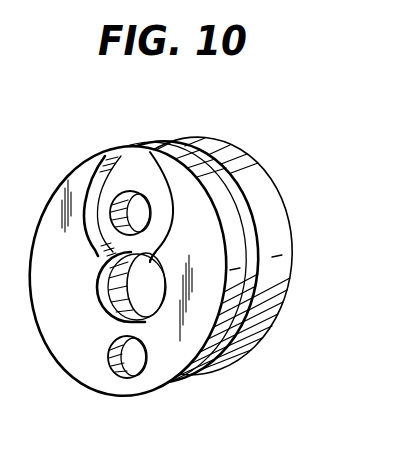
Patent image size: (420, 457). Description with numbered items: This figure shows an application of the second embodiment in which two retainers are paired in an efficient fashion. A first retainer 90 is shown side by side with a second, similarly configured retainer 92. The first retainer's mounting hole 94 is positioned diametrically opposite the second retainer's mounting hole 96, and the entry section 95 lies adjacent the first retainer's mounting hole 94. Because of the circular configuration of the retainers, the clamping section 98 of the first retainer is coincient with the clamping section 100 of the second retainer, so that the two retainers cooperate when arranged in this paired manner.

The first retainer 90 is at (270, 229).
The second retainer 92 is at (73, 279).
The mounting hole 94 is at (131, 191).
The entry section 95 is at (166, 205).
The mounting hole 96 is at (109, 371).
The clamping section 98 is at (95, 286).
The clamping section 100 is at (168, 274).